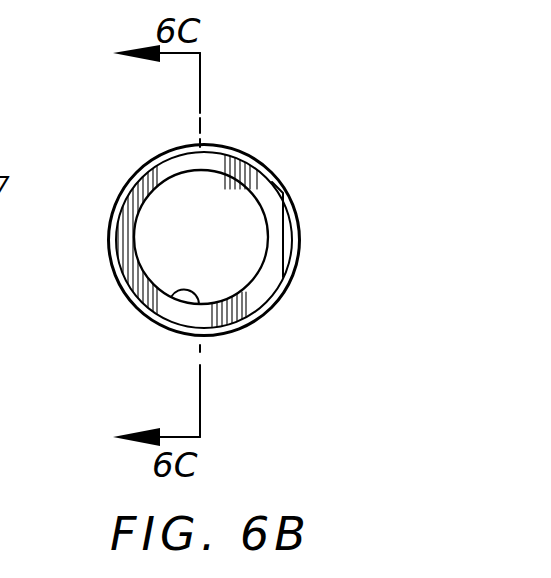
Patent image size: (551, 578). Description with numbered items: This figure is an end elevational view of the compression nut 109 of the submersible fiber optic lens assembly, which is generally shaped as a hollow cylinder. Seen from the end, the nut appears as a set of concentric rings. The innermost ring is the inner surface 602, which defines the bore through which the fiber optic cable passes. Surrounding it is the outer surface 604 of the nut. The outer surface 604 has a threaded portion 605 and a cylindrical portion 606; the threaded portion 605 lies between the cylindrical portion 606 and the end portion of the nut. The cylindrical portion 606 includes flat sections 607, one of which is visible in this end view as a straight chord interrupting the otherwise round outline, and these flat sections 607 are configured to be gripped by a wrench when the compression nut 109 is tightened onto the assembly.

The compression nut 109 is at (343, 131).
The inner surface 602 is at (200, 306).
The outer surface 604 is at (221, 153).
The threaded portion 605 is at (157, 150).
The cylindrical portion 606 is at (274, 184).
The flat sections 607 is at (285, 247).